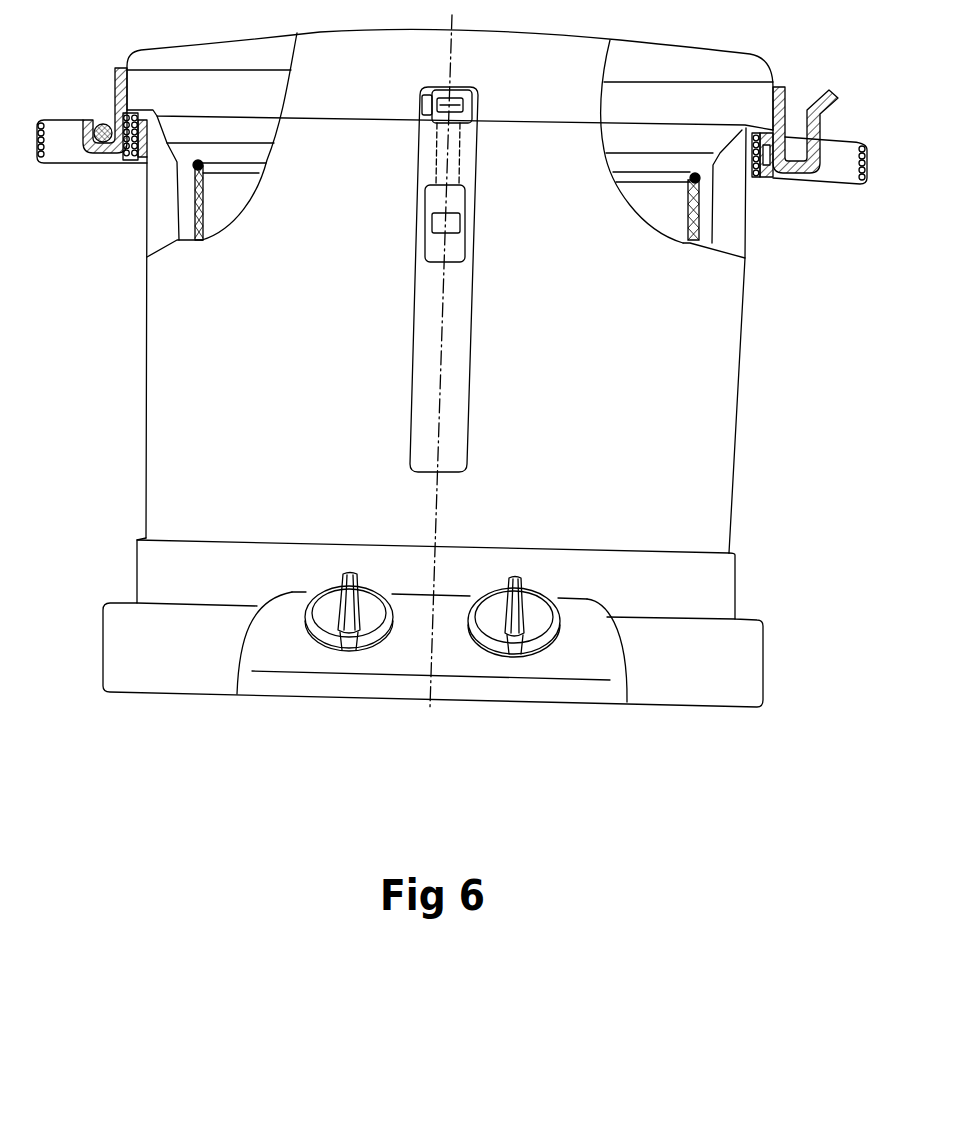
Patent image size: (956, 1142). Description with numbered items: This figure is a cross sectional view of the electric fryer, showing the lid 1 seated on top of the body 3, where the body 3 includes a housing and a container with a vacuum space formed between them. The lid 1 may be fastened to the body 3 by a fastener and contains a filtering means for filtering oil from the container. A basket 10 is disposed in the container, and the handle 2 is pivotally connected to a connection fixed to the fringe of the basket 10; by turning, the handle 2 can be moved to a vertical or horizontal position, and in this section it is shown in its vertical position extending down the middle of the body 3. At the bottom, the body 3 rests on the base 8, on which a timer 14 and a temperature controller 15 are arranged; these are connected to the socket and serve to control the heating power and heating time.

The lid 1 is at (778, 66).
The handle 2 is at (470, 377).
The body 3 is at (741, 288).
The base 8 is at (758, 691).
The basket 10 is at (700, 205).
The timer 14 is at (341, 634).
The temperature controller 15 is at (527, 647).